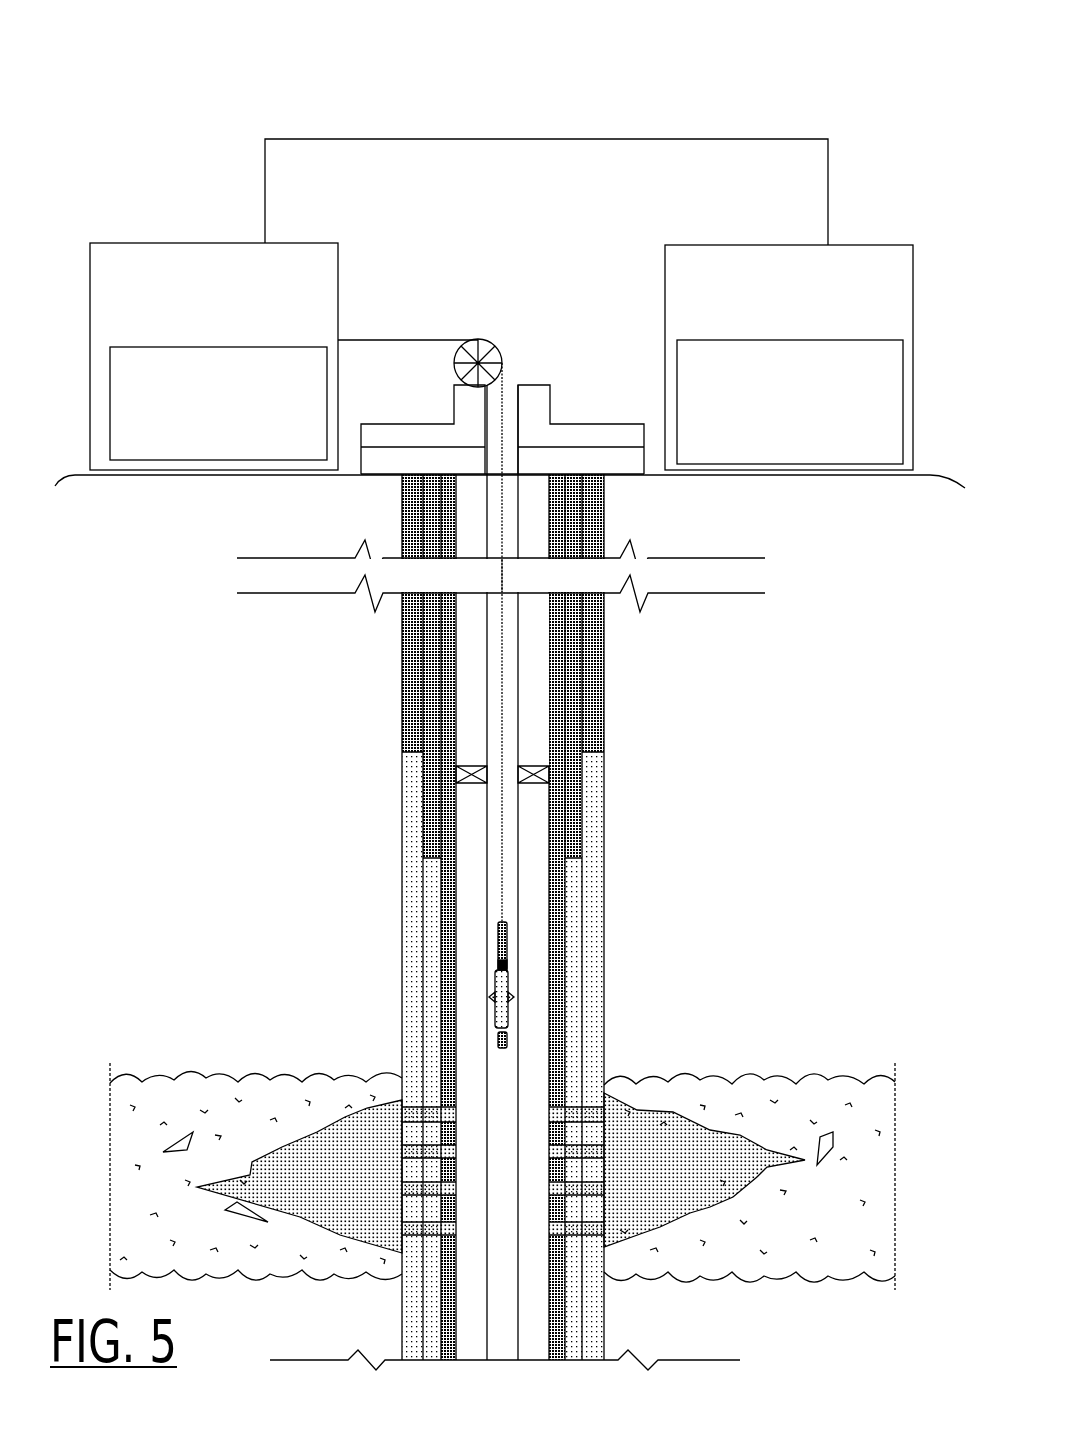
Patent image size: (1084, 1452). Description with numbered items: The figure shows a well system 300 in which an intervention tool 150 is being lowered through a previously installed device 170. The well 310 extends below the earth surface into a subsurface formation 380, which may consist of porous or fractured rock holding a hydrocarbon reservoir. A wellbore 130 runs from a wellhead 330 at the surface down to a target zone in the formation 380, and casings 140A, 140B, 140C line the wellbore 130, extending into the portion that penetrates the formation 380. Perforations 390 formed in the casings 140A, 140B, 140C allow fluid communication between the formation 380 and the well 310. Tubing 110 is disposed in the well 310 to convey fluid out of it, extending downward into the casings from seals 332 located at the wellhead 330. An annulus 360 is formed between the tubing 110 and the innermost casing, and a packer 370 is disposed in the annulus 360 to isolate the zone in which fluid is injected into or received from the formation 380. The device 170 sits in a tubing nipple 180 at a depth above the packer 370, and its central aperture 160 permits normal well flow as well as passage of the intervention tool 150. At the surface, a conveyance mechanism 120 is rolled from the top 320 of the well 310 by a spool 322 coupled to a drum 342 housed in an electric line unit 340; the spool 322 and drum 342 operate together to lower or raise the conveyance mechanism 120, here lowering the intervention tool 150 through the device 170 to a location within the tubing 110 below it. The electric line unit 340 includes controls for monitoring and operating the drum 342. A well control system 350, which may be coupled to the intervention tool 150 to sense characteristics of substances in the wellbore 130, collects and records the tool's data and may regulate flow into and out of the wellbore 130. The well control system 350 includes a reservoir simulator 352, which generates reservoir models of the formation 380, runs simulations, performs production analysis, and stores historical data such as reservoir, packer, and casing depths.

The well system 300 is at (670, 94).
The well 310 is at (344, 125).
The top of the well 320 is at (478, 363).
The spool 322 is at (470, 378).
The wellhead 330 is at (580, 396).
The seals 332 is at (550, 436).
The electric line unit 340 is at (199, 318).
The drum 342 is at (204, 431).
The well control system 350 is at (774, 311).
The reservoir simulator 352 is at (774, 428).
The casing 140A is at (404, 633).
The casing 140B is at (437, 686).
The casing 140C is at (448, 760).
The wellbore 130 is at (550, 626).
The annulus 360 is at (540, 679).
The packer 370 is at (530, 776).
The conveyance mechanism 120 is at (500, 881).
The tubing 110 is at (520, 861).
The intervention tool 150 is at (498, 930).
The central aperture 160 is at (497, 968).
The device 170 is at (497, 1015).
The tubing nipple 180 is at (514, 997).
The subsurface formation 380 is at (308, 1130).
The perforations 390 is at (606, 1120).